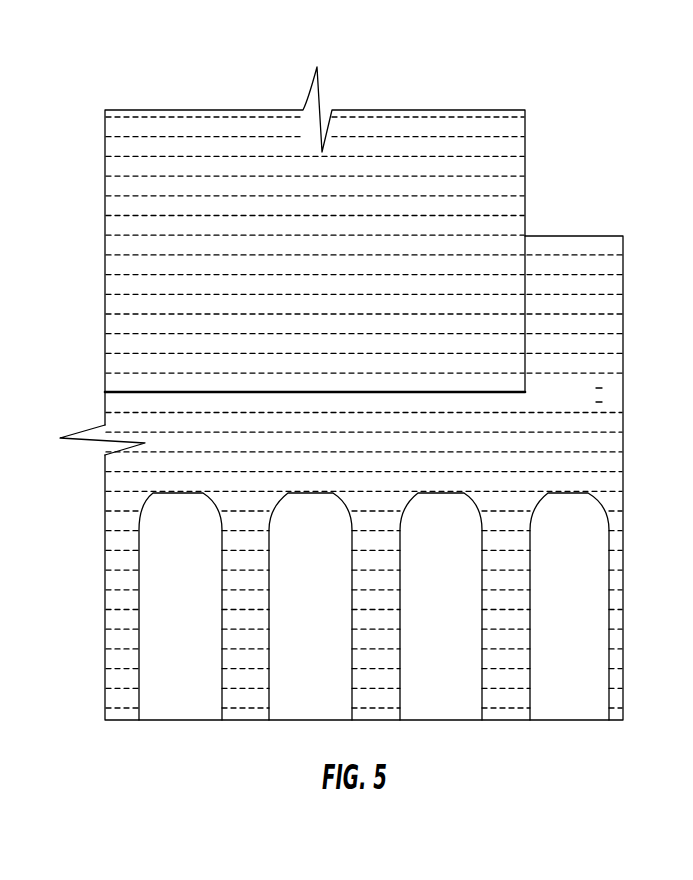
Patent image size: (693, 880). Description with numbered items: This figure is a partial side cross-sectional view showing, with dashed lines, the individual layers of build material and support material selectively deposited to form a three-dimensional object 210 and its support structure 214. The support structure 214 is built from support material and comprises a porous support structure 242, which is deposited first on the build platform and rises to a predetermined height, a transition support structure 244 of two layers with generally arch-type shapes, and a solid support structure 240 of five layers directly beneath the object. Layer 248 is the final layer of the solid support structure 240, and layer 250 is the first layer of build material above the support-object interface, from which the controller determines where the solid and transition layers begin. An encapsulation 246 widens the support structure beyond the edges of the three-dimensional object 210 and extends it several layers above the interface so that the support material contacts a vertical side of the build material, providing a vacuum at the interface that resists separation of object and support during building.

The three-dimensional object 210 is at (452, 110).
The encapsulation 246 is at (585, 238).
The layer 250 is at (598, 386).
The layer 248 is at (598, 401).
The support structure 214 is at (103, 466).
The solid support structure 240 is at (183, 478).
The porous support structure 242 is at (258, 640).
The transition support structure 244 is at (345, 512).